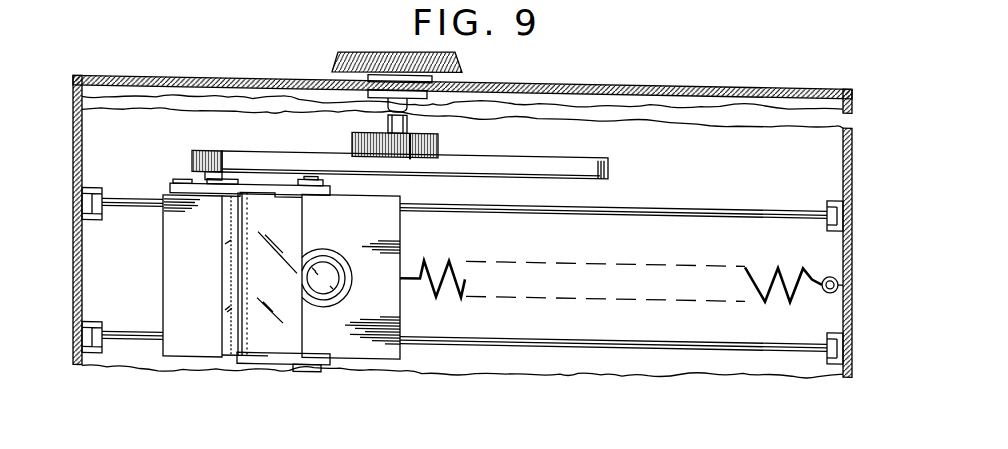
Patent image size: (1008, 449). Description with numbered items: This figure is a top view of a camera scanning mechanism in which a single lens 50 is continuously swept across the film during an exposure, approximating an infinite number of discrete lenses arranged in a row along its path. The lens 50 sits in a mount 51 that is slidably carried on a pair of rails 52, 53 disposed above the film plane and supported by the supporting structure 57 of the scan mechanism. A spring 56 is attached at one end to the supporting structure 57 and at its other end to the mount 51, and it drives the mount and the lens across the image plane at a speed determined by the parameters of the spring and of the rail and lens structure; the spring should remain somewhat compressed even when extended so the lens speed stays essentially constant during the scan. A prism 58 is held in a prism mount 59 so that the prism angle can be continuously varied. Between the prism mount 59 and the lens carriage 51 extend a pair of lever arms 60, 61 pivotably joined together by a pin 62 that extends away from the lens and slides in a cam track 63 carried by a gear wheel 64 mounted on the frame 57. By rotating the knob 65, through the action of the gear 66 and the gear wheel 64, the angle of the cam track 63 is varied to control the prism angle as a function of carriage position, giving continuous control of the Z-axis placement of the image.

The lens 50 is at (330, 273).
The lens mount 51 is at (400, 312).
The rail 52 is at (118, 331).
The rail 53 is at (746, 202).
The spring 56 is at (783, 285).
The supporting structure 57 is at (853, 143).
The prism 58 is at (222, 286).
The prism mount 59 is at (316, 180).
The lever arm 60 is at (250, 179).
The lever arm 61 is at (200, 193).
The pin 62 is at (205, 146).
The cam track 63 is at (612, 157).
The gear wheel 64 is at (440, 139).
The knob 65 is at (465, 57).
The gear 66 is at (410, 152).